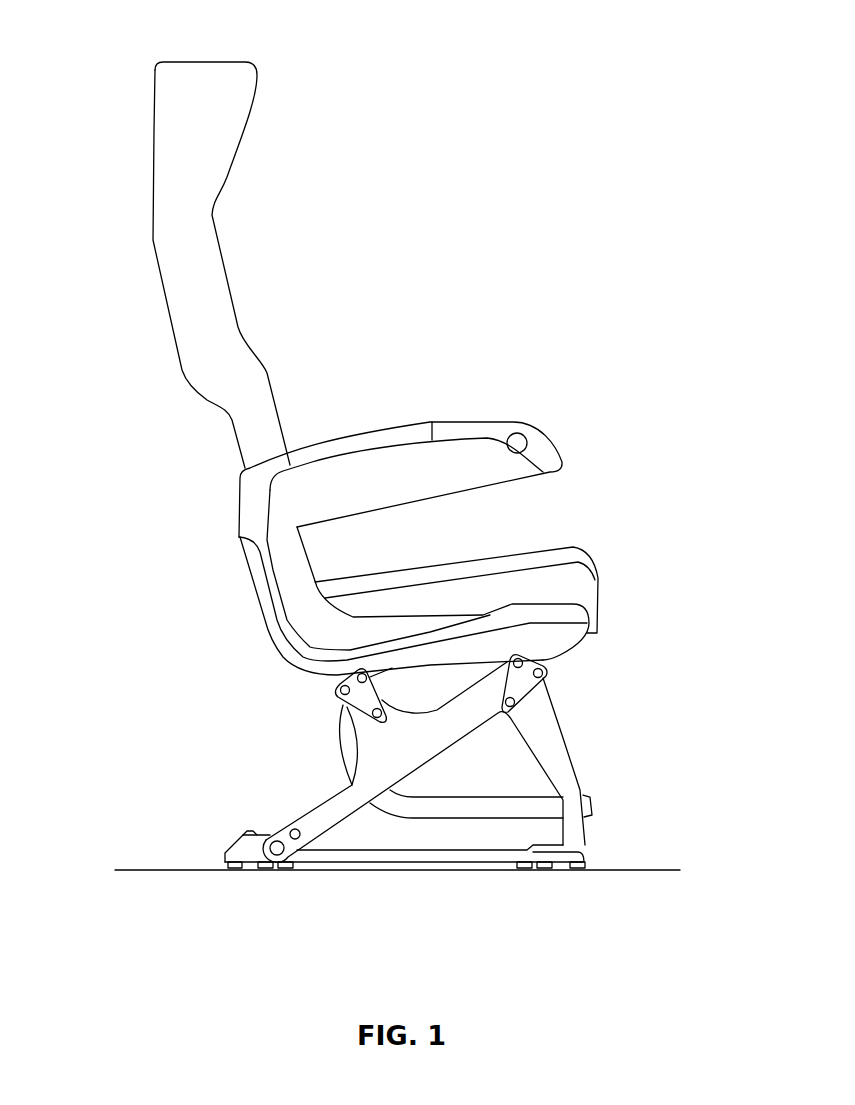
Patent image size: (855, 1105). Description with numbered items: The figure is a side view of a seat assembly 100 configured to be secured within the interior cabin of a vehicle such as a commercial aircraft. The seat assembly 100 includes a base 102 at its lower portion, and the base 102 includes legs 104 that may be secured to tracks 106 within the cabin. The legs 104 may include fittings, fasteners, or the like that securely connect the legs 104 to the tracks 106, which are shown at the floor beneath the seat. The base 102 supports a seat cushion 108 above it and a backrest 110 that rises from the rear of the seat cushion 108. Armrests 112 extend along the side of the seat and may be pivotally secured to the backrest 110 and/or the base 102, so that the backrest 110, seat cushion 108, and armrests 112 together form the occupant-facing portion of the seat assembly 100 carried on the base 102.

The seat assembly 100 is at (134, 64).
The base 102 is at (334, 783).
The legs 104 is at (225, 853).
The tracks 106 is at (303, 870).
The seat cushion 108 is at (585, 550).
The backrest 110 is at (224, 178).
The armrests 112 is at (467, 420).